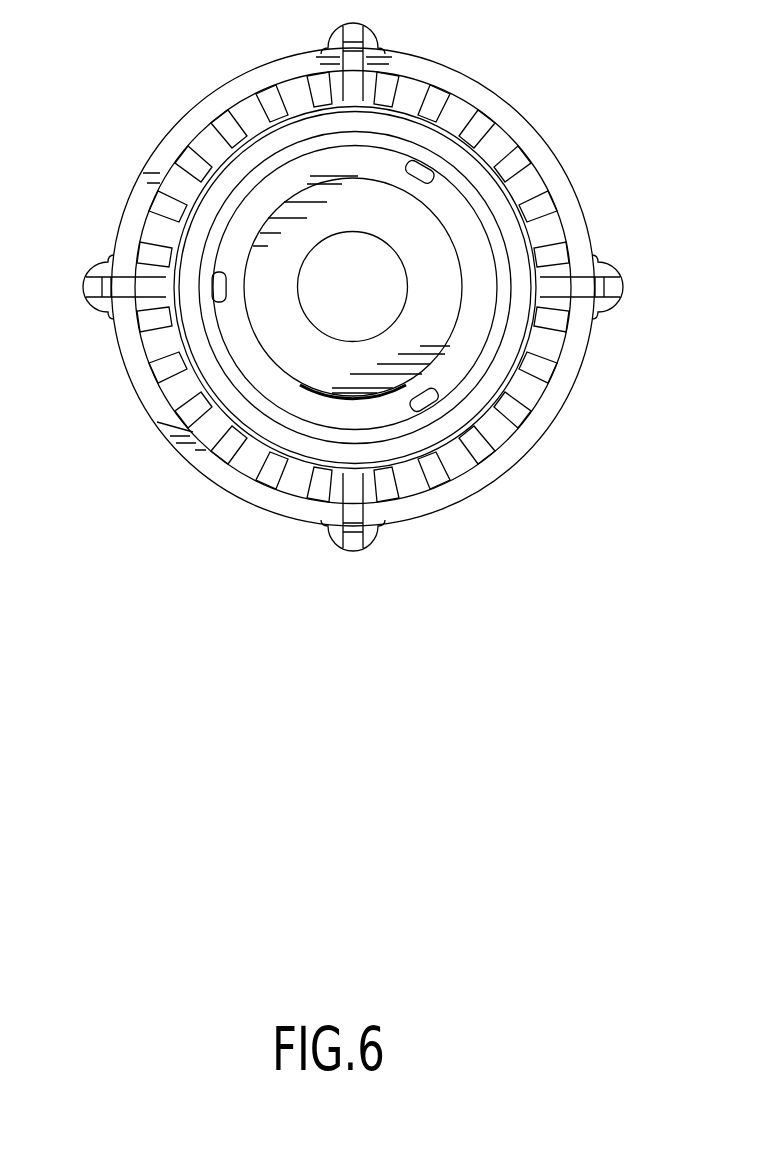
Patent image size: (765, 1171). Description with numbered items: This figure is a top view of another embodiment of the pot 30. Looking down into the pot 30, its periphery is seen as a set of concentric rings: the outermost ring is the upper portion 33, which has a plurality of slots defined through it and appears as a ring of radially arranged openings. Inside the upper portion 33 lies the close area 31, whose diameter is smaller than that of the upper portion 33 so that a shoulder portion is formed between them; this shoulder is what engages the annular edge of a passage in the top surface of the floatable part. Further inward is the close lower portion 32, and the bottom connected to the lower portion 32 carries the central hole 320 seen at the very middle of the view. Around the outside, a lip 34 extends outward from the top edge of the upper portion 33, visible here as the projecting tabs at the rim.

The pot 30 is at (104, 110).
The close area 31 is at (232, 173).
The close lower portion 32 is at (243, 239).
The upper portion 33 is at (522, 186).
The lip 34 is at (627, 283).
The central hole 320 is at (394, 300).